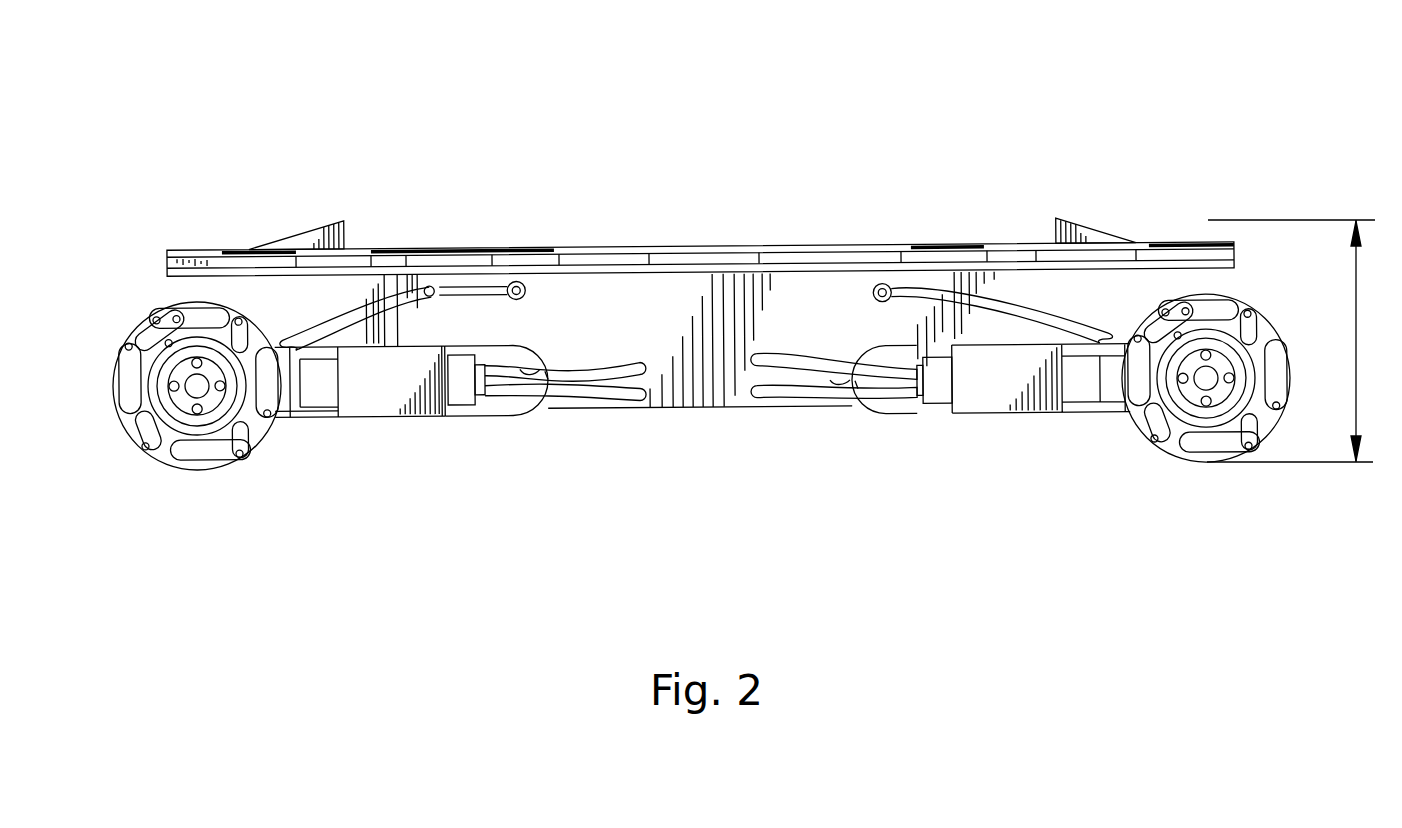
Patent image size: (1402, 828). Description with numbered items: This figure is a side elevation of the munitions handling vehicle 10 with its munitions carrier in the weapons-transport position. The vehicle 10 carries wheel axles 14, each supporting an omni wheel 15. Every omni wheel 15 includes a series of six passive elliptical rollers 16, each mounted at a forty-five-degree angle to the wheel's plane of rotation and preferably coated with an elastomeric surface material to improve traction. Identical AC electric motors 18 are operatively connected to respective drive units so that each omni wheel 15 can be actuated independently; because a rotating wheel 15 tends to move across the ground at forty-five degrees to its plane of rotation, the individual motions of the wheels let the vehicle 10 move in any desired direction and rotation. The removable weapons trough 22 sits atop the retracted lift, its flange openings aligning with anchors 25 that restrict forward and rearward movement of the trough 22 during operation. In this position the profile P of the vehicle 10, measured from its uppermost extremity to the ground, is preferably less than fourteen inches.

The vehicle 10 is at (650, 155).
The wheel axles 14 is at (205, 390).
The omni wheels 15 is at (147, 452).
The passive elliptical rollers 16 is at (195, 302).
The AC electric motors 18 is at (457, 388).
The weapons trough 22 is at (170, 251).
The anchors 25 is at (316, 236).
The profile P is at (1357, 283).